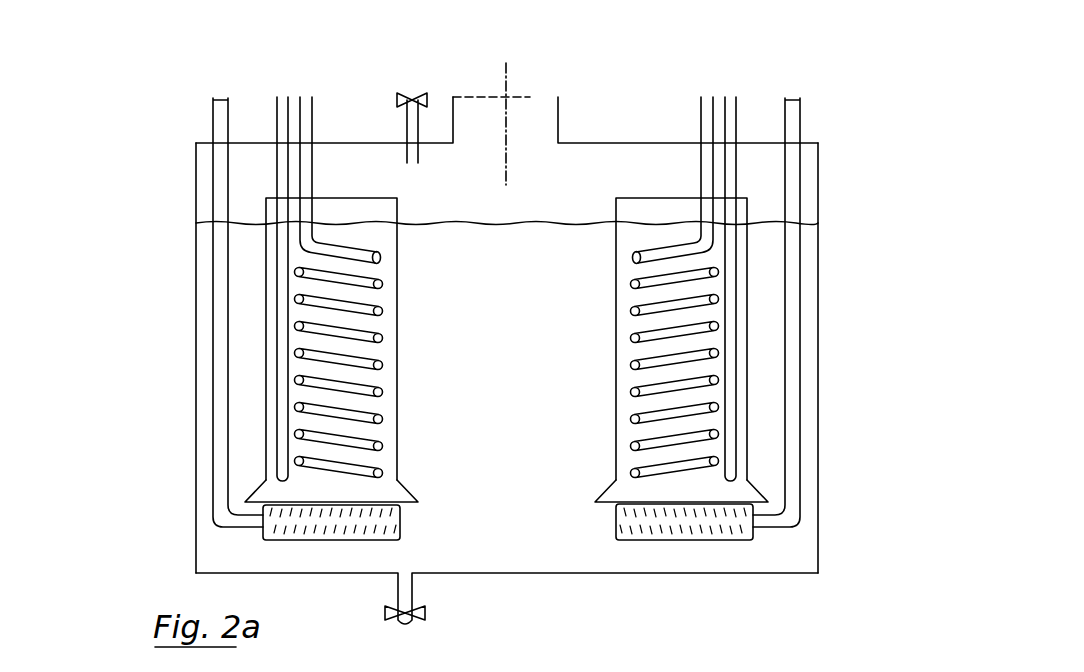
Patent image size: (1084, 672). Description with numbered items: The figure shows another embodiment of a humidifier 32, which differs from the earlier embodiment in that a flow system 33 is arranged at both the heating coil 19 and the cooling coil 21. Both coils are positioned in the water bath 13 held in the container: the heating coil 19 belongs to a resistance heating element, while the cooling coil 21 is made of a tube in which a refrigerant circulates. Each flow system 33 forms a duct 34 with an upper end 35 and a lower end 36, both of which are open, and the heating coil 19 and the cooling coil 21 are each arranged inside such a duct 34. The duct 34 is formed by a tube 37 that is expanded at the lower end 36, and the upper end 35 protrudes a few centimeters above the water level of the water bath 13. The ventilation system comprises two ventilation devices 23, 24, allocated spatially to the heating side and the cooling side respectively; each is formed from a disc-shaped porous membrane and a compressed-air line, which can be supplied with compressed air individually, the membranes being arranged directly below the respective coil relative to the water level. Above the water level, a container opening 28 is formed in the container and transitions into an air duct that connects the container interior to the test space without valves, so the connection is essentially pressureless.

The water bath 13 is at (513, 548).
The heating coil 19 is at (293, 350).
The cooling coil 21 is at (724, 322).
The ventilation device 23 is at (196, 517).
The ventilation device 24 is at (823, 510).
The container opening 28 is at (533, 104).
The humidifier 32 is at (113, 163).
The flow system 33 is at (262, 380).
The duct 34 is at (327, 477).
The upper end 35 is at (264, 197).
The lower end 36 is at (257, 498).
The tube 37 is at (265, 419).